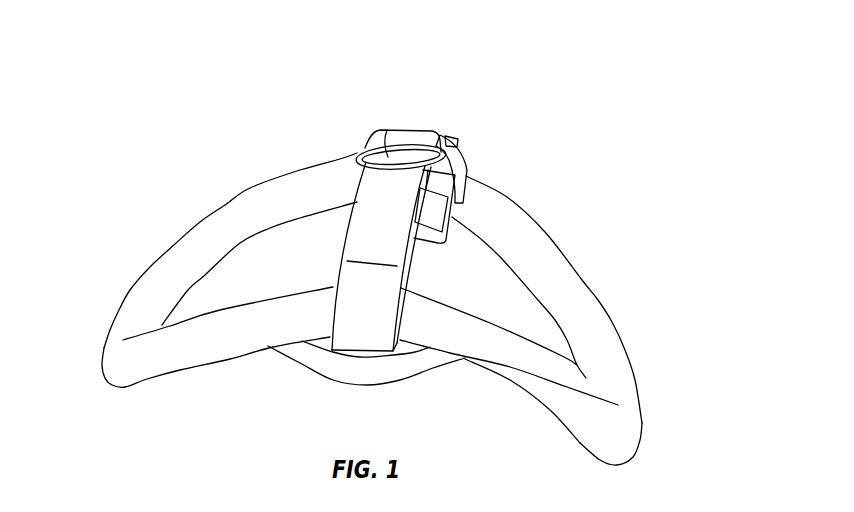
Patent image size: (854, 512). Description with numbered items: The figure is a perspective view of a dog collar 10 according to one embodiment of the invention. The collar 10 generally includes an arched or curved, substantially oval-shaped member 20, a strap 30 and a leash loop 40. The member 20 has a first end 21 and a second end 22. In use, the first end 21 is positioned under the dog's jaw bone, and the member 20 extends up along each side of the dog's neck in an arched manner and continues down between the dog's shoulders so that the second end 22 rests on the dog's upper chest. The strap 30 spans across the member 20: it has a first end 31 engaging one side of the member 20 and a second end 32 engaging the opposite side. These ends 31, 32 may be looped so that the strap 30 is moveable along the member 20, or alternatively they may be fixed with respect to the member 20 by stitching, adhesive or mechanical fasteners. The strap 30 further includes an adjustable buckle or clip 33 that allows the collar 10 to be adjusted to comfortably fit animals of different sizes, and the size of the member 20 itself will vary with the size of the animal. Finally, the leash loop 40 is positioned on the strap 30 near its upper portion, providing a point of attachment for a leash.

The dog collar 10 is at (503, 111).
The member 20 is at (522, 232).
The first end 21 is at (630, 442).
The second end 22 is at (118, 366).
The strap 30 is at (357, 224).
The first end 31 is at (363, 333).
The second end 32 is at (450, 211).
The adjustable buckle or clip 33 is at (455, 147).
The leash loop 40 is at (383, 150).